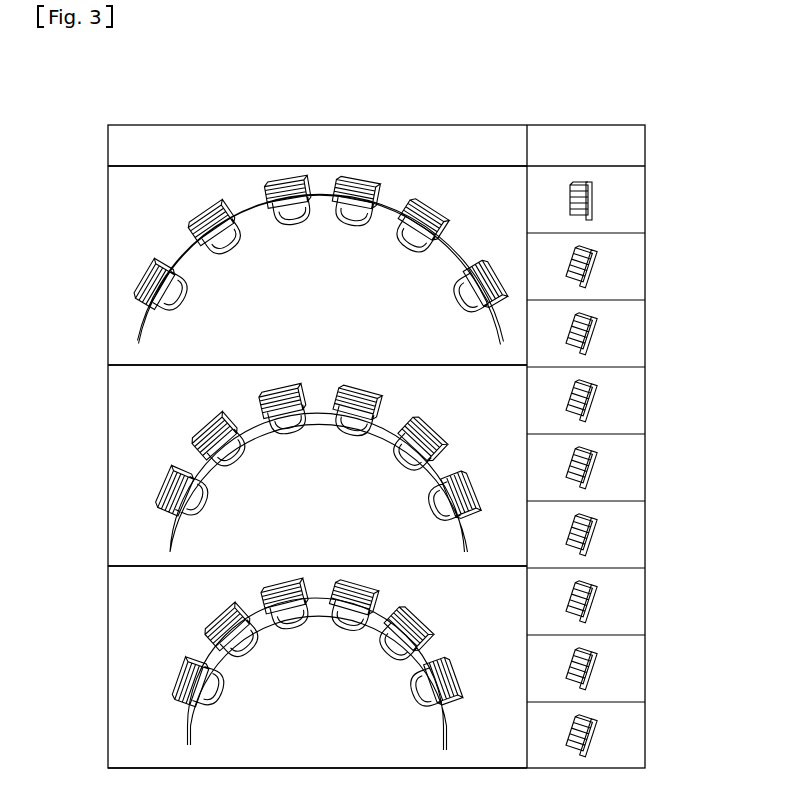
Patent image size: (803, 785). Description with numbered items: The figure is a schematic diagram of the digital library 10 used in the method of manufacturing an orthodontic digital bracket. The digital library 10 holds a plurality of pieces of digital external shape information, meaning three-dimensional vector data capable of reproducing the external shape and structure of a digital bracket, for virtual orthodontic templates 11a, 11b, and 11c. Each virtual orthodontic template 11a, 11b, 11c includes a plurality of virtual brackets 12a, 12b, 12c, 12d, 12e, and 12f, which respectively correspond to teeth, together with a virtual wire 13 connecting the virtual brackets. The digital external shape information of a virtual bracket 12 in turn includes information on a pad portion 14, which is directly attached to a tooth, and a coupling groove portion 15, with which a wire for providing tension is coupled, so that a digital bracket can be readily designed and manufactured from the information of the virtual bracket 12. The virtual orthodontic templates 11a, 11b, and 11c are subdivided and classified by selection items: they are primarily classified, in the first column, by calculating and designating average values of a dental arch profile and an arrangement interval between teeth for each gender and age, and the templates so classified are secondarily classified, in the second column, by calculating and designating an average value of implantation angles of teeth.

The digital library 10 is at (142, 98).
The virtual orthodontic template 11a is at (317, 265).
The virtual orthodontic template 11b is at (317, 465).
The virtual orthodontic template 11c is at (317, 667).
The virtual bracket 12 is at (636, 460).
The virtual bracket 12a is at (194, 306).
The virtual bracket 12b is at (249, 259).
The virtual bracket 12c is at (319, 237).
The virtual bracket 12d is at (368, 181).
The virtual bracket 12e is at (443, 200).
The virtual bracket 12f is at (446, 304).
The virtual wire 13 is at (187, 257).
The pad portion 14 is at (588, 196).
The coupling groove portion 15 is at (592, 210).